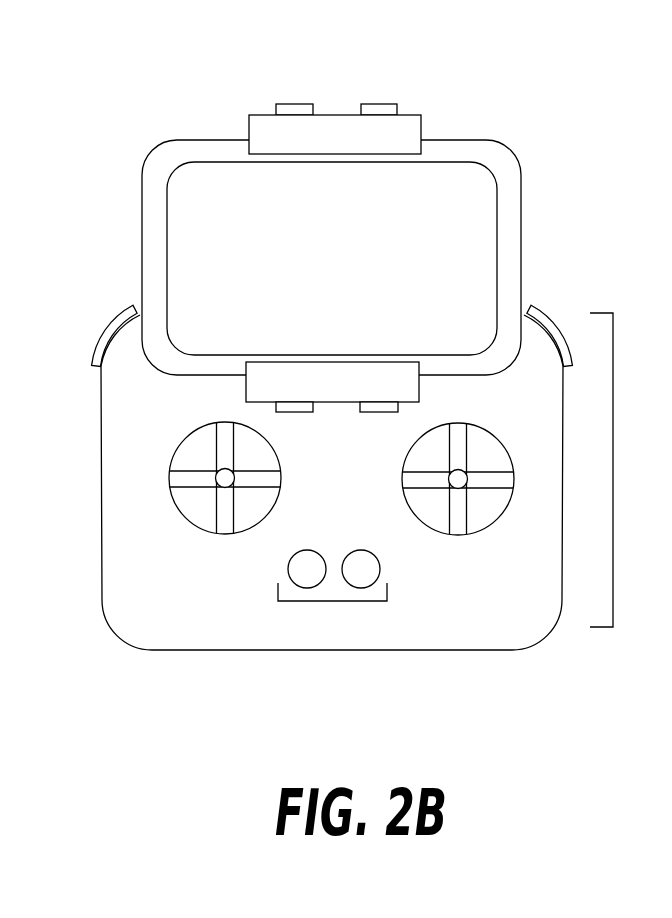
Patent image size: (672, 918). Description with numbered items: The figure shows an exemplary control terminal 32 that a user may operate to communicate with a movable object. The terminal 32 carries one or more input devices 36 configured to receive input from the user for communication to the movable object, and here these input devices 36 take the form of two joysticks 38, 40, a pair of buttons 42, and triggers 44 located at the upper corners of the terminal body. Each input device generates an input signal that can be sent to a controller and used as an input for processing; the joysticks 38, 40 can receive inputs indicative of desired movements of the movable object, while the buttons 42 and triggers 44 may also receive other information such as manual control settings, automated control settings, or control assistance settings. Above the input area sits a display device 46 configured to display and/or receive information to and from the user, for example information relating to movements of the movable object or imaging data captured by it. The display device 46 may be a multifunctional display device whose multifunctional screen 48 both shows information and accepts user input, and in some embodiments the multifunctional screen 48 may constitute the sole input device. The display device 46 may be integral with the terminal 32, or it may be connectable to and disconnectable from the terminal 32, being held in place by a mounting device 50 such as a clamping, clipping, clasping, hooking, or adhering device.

The terminal 32 is at (364, 500).
The input devices 36 is at (625, 470).
The joystick 38 is at (458, 481).
The joystick 40 is at (225, 481).
The buttons 42 is at (332, 596).
The triggers 44 is at (105, 323).
The display device 46 is at (510, 148).
The multifunctional screen 48 is at (329, 258).
The mounting device 50 is at (280, 132).